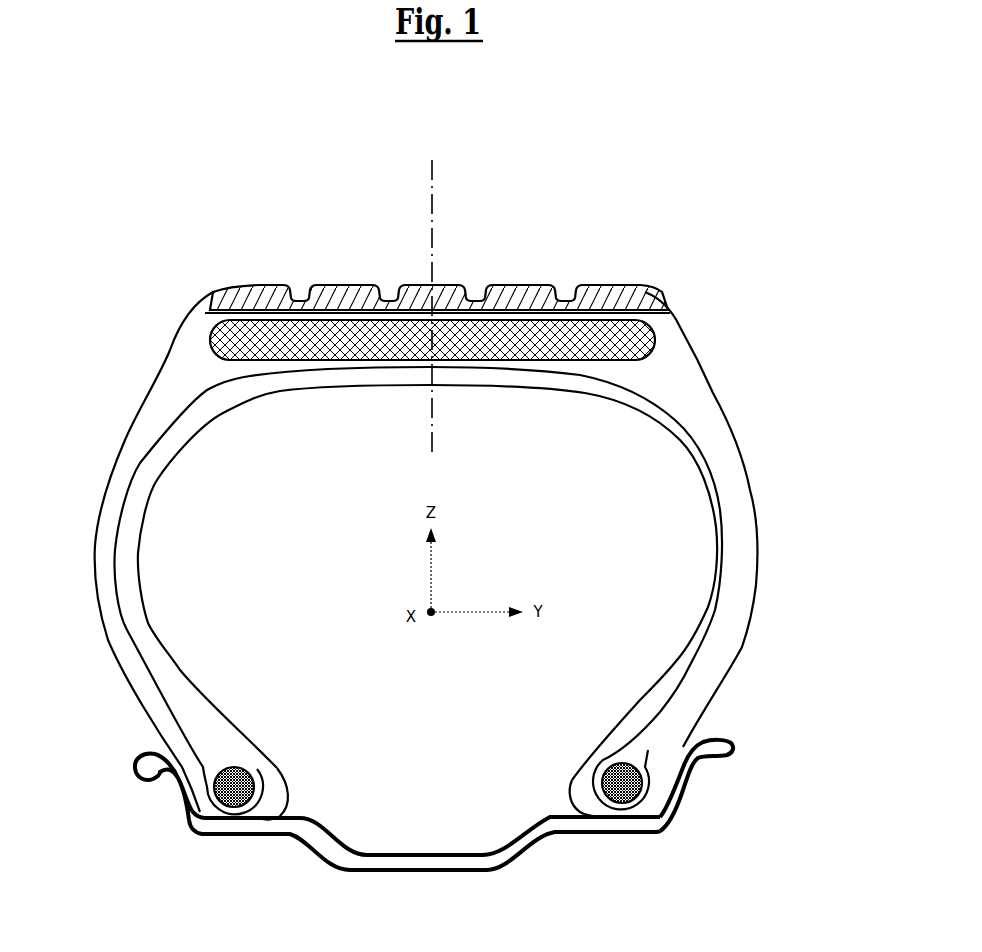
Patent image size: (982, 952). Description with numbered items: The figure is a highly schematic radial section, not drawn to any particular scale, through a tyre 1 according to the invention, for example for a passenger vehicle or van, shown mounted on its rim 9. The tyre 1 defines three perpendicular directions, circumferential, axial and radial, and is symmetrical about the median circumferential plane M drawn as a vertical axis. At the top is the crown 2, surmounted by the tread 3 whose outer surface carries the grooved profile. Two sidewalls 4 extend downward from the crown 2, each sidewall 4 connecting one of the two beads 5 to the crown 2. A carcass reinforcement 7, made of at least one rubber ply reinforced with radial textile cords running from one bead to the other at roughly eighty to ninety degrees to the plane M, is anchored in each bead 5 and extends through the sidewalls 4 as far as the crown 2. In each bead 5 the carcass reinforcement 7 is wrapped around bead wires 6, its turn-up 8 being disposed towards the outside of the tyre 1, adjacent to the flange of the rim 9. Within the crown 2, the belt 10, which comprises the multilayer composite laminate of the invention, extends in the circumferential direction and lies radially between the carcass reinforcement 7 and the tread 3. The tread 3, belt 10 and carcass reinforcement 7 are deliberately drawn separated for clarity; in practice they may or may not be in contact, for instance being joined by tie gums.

The tyre 1 is at (449, 547).
The crown 2 is at (688, 311).
The tread 3 is at (535, 284).
The sidewall 4 is at (106, 554).
The bead 5 is at (263, 810).
The bead wire 6 is at (258, 787).
The carcass reinforcement 7 is at (125, 478).
The turn-up 8 is at (198, 762).
The rim 9 is at (192, 797).
The belt 10 is at (212, 333).
The median circumferential plane M is at (434, 172).